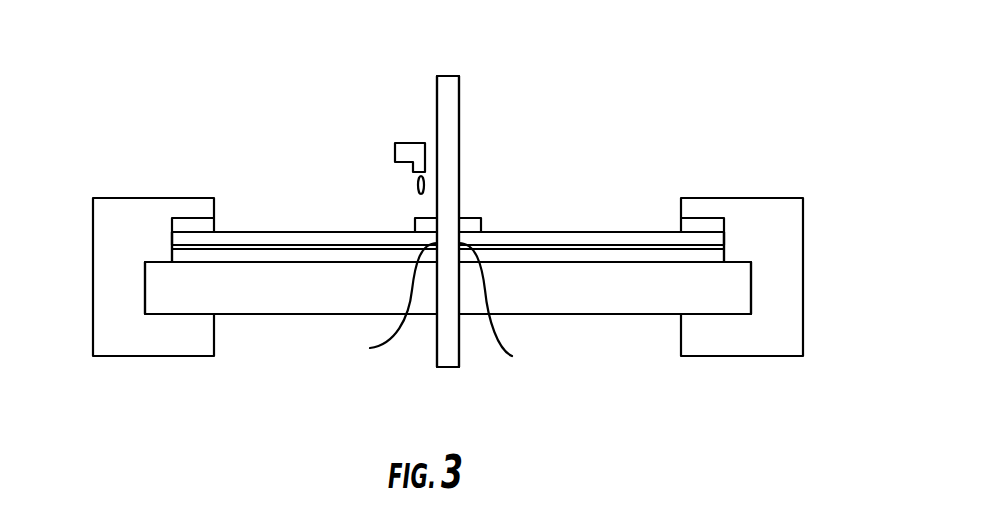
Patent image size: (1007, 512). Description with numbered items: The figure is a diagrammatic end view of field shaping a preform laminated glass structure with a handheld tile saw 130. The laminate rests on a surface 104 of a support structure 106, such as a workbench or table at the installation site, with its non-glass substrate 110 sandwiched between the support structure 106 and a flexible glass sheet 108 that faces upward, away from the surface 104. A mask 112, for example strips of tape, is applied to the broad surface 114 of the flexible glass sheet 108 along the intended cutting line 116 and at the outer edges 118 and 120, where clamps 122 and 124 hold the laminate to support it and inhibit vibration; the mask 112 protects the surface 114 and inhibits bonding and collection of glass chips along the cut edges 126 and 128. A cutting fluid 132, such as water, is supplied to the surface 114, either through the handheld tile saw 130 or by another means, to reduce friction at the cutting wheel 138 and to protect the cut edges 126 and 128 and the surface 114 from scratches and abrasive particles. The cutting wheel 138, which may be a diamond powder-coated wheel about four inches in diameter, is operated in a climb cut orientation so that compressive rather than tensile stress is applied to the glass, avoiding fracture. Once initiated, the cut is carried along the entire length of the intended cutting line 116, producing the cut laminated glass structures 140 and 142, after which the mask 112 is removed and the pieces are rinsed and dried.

The surface 104 is at (578, 258).
The support structure 106 is at (115, 395).
The flexible glass sheet 108 is at (281, 235).
The non-glass substrate 110 is at (292, 255).
The mask 112 is at (195, 227).
The broad surface 114 is at (362, 235).
The intended cutting line 116 is at (467, 155).
The outer edge 118 is at (170, 239).
The outer edge 120 is at (724, 238).
The clamp 122 is at (118, 293).
The clamp 124 is at (788, 342).
The cut edge 126 is at (384, 305).
The cut edge 128 is at (504, 306).
The handheld tile saw 130 is at (540, 97).
The cutting fluid 132 is at (417, 185).
The cutting wheel 138 is at (449, 78).
The cut laminated glass structure 140 is at (215, 295).
The cut laminated glass structure 142 is at (613, 277).